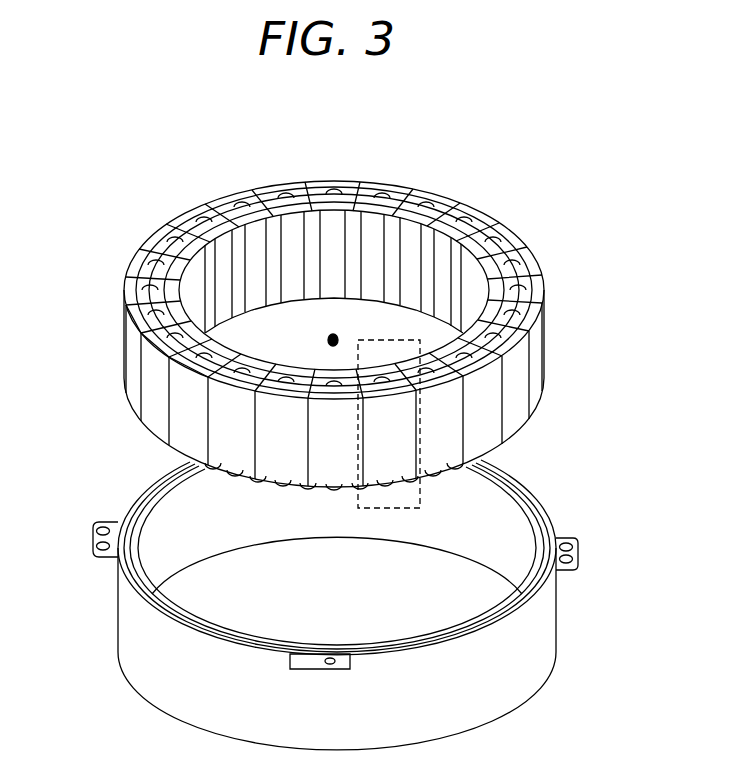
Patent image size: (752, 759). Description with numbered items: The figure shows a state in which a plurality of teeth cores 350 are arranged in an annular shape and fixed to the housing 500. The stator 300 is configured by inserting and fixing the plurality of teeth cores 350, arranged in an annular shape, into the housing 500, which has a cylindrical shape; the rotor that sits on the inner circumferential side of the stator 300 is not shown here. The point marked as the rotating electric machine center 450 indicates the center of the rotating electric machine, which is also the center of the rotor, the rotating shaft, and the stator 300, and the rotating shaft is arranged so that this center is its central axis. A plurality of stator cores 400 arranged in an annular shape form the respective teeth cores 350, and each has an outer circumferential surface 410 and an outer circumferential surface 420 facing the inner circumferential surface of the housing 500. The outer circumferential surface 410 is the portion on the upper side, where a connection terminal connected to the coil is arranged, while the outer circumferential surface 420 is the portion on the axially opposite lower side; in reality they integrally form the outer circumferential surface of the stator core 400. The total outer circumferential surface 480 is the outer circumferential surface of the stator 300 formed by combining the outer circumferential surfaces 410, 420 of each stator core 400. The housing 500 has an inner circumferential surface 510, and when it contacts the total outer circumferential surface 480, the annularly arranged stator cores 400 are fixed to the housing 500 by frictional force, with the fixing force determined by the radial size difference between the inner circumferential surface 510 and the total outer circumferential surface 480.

The stator 300 is at (332, 328).
The teeth core 350 is at (400, 497).
The stator core 400 is at (380, 428).
The outer circumferential surface 410 is at (517, 359).
The outer circumferential surface 420 is at (512, 427).
The rotating electric machine center 450 is at (328, 340).
The total outer circumferential surface 480 is at (157, 402).
The housing 500 is at (378, 605).
The inner circumferential surface 510 is at (505, 530).